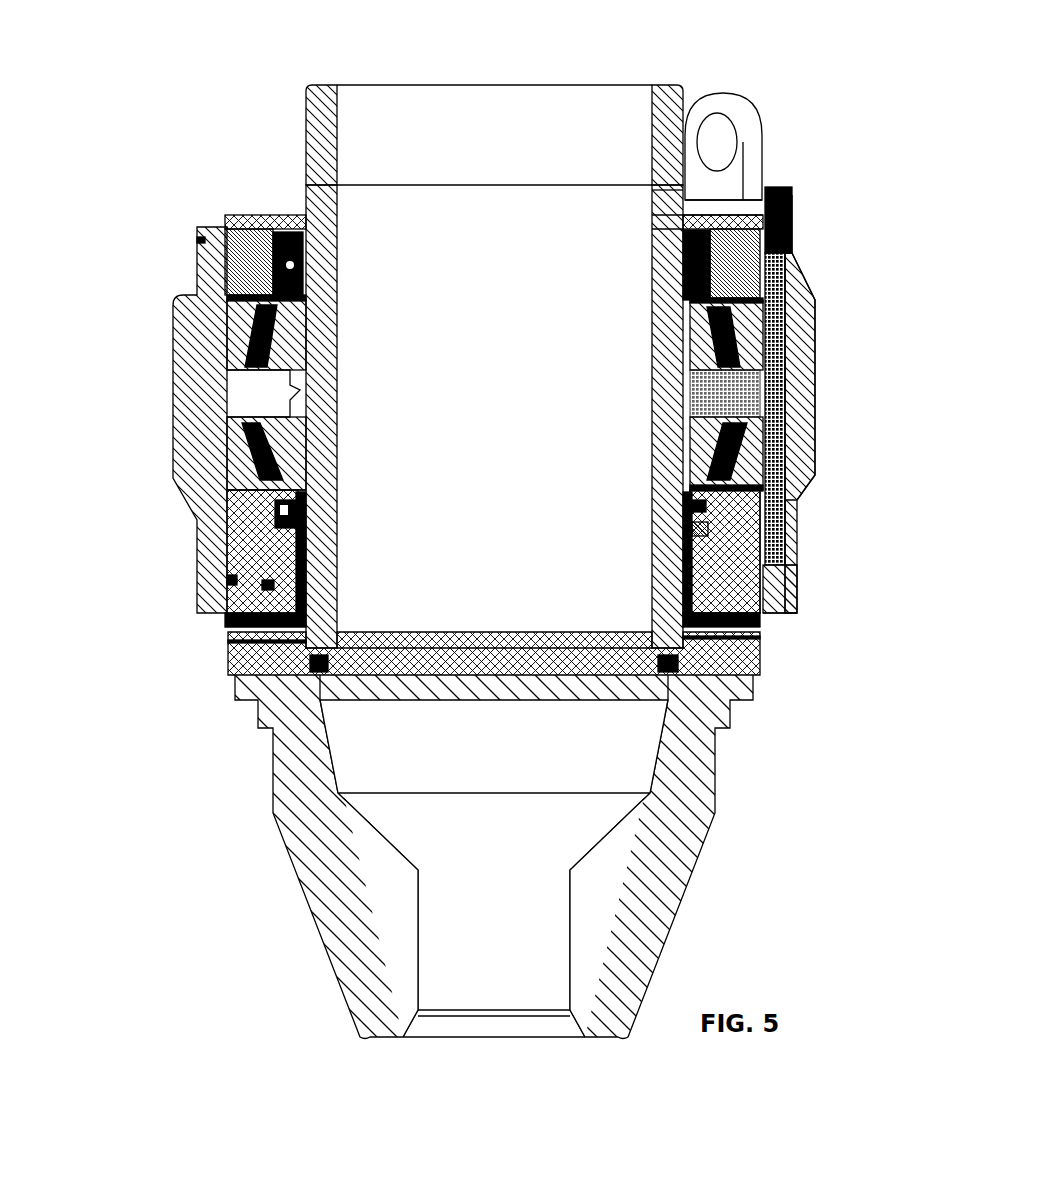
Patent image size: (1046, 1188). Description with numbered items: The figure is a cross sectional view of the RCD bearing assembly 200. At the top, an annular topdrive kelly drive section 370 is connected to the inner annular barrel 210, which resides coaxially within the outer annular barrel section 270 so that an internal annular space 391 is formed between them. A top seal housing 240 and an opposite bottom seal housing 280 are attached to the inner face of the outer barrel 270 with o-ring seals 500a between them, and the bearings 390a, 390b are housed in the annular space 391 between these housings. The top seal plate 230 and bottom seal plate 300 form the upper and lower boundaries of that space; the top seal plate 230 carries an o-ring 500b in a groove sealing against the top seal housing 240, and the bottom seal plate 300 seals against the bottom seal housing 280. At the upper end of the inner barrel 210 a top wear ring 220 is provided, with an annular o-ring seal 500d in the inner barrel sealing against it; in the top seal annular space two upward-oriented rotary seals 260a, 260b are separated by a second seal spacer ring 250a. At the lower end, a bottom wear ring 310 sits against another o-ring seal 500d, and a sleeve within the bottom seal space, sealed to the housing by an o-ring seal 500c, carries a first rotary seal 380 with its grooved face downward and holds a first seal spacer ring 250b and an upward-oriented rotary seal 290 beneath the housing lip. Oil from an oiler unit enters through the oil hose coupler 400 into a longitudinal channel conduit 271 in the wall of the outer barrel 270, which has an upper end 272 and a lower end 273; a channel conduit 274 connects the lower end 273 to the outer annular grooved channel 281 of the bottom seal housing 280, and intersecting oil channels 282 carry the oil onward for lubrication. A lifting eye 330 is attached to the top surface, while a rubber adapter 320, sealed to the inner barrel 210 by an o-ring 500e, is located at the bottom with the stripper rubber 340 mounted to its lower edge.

The bearing assembly 200 is at (205, 805).
The inner annular barrel 210 is at (303, 196).
The top wear ring 220 is at (650, 222).
The top seal plate 230 is at (240, 214).
The top seal housing 240 is at (228, 237).
The second seal spacer ring 250a is at (650, 267).
The first seal spacer ring 250b is at (700, 530).
The rotary seal 260a is at (655, 240).
The rotary seal 260b is at (300, 272).
The outer annular barrel section 270 is at (230, 262).
The channel conduit 271 is at (800, 320).
The upper end of channel conduit 272 is at (795, 210).
The lower end of channel conduit 273 is at (790, 540).
The channel conduit 274 is at (793, 575).
The bottom seal housing 280 is at (222, 507).
The outer annular grooved channel 281 is at (745, 535).
The intersecting oil channel 282 is at (770, 612).
The rotary seal 290 is at (686, 512).
The bottom seal plate 300 is at (225, 622).
The bottom wear ring 310 is at (680, 535).
The rubber adapter 320 is at (228, 657).
The bearing assembly lifting eye 330 is at (717, 93).
The stripper rubber 340 is at (323, 945).
The annular topdrive kelly drive section 370 is at (303, 110).
The first rotary seal 380 is at (685, 590).
The bearing 390a is at (270, 382).
The bearing 390b is at (275, 405).
The internal annular space 391 is at (735, 385).
The oil hose coupler 400 is at (773, 195).
The o-ring seal 500a is at (200, 240).
The o-ring 500b is at (270, 585).
The o-ring seal 500c is at (227, 580).
The annular o-ring seal 500d is at (230, 300).
The o-ring seal 500e is at (225, 643).